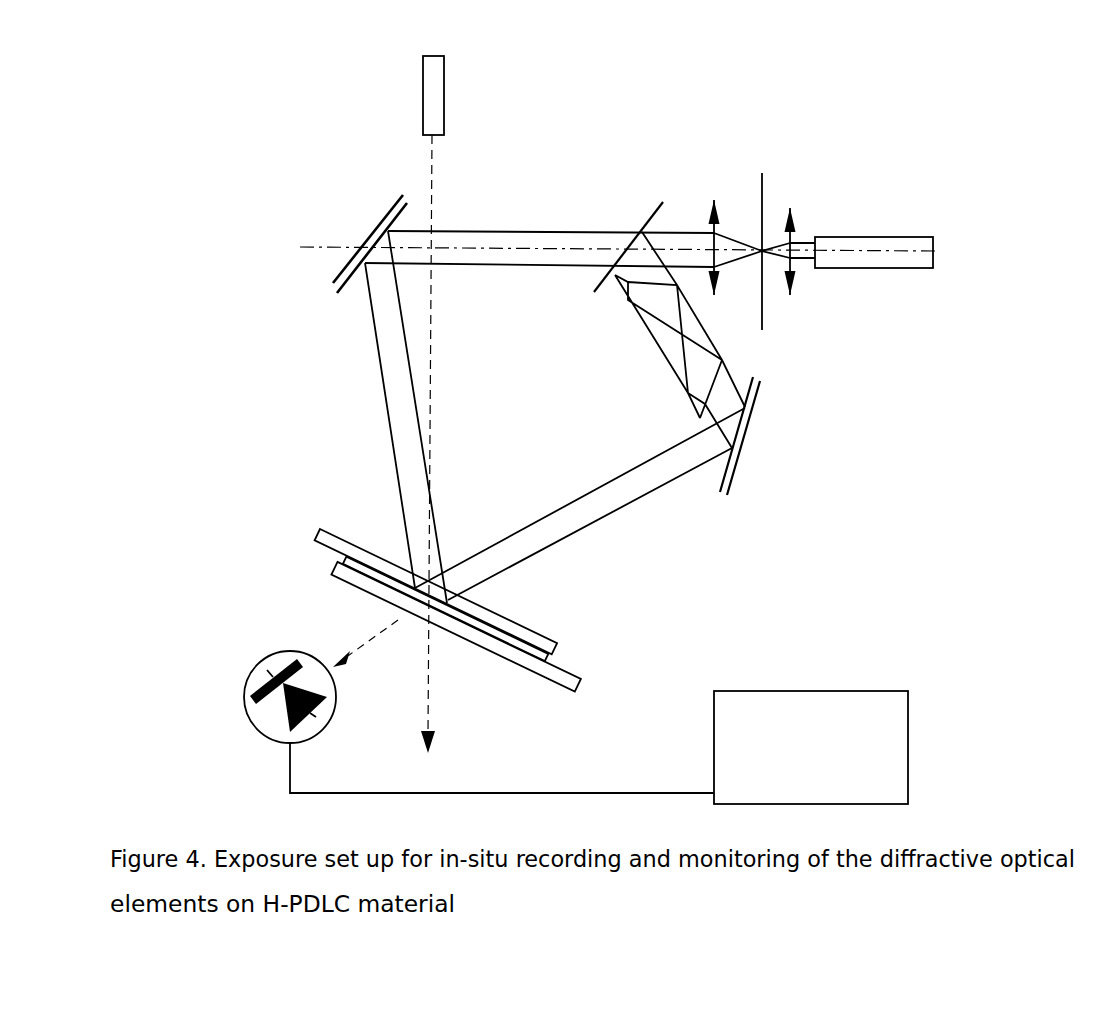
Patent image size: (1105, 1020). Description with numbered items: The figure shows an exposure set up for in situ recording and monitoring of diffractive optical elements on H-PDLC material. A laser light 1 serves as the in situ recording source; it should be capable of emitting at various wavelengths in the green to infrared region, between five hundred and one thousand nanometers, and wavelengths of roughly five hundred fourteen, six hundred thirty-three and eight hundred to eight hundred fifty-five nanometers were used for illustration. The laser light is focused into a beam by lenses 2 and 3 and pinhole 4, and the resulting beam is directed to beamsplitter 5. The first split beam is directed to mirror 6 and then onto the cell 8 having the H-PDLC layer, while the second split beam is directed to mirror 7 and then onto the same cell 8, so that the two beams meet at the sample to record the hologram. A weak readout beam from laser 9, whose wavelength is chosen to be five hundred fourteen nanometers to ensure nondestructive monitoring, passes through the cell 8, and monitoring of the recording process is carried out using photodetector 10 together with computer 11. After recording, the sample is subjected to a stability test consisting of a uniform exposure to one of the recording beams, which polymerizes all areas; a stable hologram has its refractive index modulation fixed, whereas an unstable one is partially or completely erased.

The laser light 1 is at (874, 221).
The lens 2 is at (796, 228).
The lens 3 is at (717, 223).
The pinhole 4 is at (763, 224).
The beamsplitter 5 is at (628, 229).
The mirror 6 is at (370, 228).
The mirror 7 is at (759, 436).
The cell 8 is at (458, 610).
The laser 9 is at (458, 95).
The photodetector 10 is at (290, 665).
The computer 11 is at (811, 717).